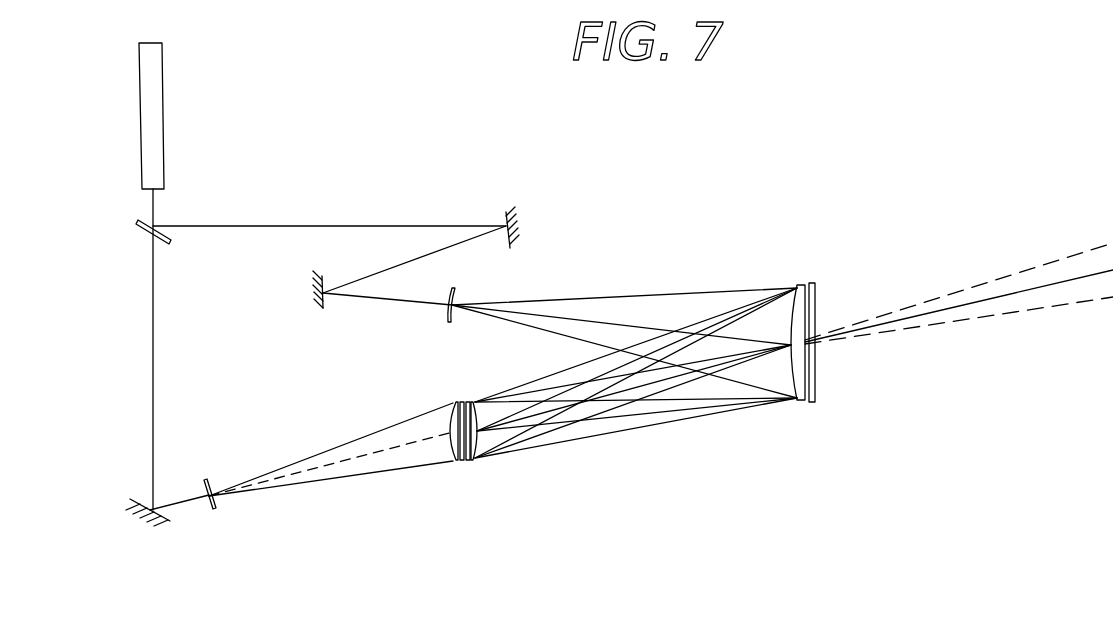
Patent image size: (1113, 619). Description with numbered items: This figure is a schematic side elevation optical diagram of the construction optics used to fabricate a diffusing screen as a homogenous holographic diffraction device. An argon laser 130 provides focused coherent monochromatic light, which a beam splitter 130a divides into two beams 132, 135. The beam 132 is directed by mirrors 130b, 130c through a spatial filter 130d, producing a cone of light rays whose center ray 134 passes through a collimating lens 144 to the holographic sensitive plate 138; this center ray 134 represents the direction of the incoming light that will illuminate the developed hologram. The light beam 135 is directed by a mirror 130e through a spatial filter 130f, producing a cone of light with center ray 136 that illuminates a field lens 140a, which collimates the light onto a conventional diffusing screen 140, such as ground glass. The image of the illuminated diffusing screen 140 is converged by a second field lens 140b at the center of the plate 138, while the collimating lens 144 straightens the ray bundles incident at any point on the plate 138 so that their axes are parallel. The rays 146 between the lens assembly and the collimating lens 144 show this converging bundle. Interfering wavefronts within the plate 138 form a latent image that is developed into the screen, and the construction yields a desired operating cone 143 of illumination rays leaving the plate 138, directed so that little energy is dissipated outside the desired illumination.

The argon laser 130 is at (164, 153).
The beam splitter 130a is at (152, 229).
The mirror 130b is at (506, 212).
The mirror 130c is at (323, 308).
The spatial filter 130d is at (455, 290).
The mirror 130e is at (147, 500).
The spatial filter 130f is at (212, 484).
The beam 132 is at (330, 225).
The center ray 134 is at (642, 325).
The light beam 135 is at (155, 391).
The center ray 136 is at (356, 458).
The holographic sensitive plate 138 is at (813, 402).
The conventional diffusing screen 140 is at (459, 425).
The field lens 140a is at (453, 402).
The field lens 140b is at (475, 460).
The operating cone 143 is at (1053, 228).
The collimating lens 144 is at (796, 292).
The rays 146 is at (642, 387).